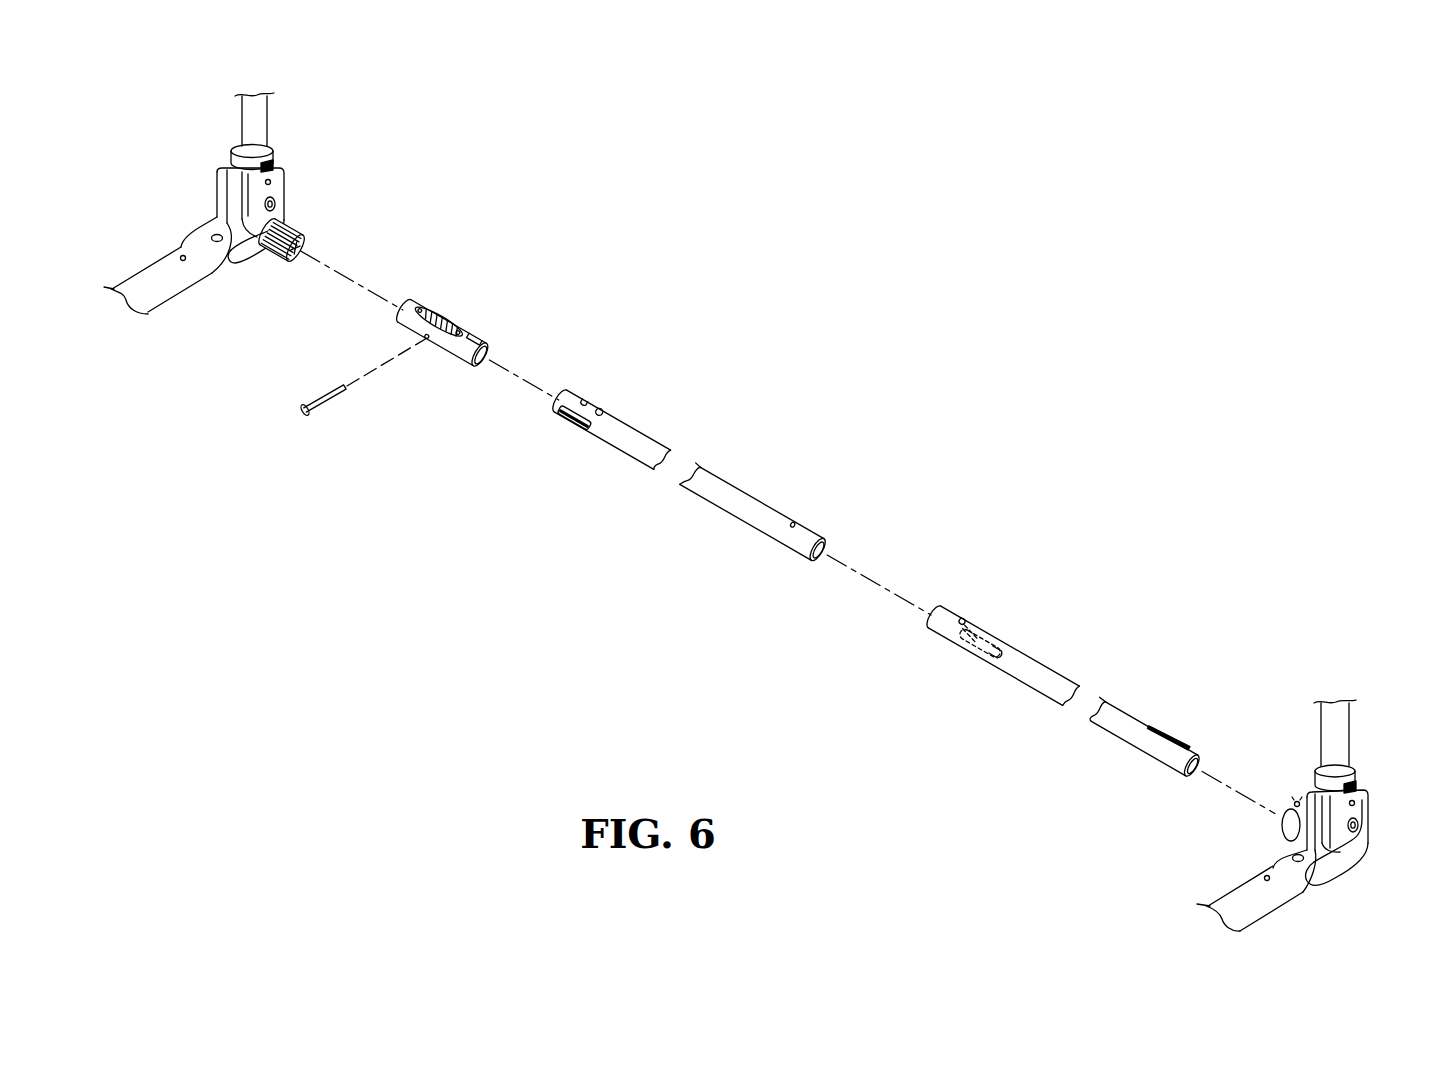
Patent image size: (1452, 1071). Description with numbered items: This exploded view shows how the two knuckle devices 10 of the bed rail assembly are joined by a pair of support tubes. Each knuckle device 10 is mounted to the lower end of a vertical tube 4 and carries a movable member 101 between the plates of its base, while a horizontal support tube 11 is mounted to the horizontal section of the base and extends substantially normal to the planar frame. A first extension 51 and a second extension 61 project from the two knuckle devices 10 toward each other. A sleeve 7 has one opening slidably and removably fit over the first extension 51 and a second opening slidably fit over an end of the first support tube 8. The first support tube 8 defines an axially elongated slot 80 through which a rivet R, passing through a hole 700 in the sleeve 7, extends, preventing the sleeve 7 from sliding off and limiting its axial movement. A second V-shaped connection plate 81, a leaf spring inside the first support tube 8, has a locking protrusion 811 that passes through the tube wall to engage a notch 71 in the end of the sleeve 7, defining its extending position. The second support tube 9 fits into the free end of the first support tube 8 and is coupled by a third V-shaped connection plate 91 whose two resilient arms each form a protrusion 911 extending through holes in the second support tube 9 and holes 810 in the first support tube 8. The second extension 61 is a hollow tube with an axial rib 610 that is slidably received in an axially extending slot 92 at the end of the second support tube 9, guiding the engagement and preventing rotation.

The knuckle device 10 is at (208, 195).
The vertical tube 4 is at (253, 123).
The first extension 51 is at (297, 232).
The sleeve 7 is at (420, 300).
The notch 71 is at (475, 335).
The hole 700 is at (427, 342).
The rivet R is at (306, 415).
The first support tube 8 is at (637, 440).
The axially elongated slot 80 is at (562, 413).
The second V-shaped connection plate 81 is at (585, 396).
The locking protrusion 811 is at (601, 406).
The holes 810 is at (797, 522).
The second support tube 9 is at (1023, 660).
The third V-shaped connection plate 91 is at (973, 660).
The protrusion 911 is at (962, 619).
The axially extending slot 92 is at (1177, 740).
The movable member 101 is at (1353, 772).
The second extension 61 is at (1293, 827).
The rib 610 is at (1297, 802).
The horizontal support tube 11 is at (1255, 900).